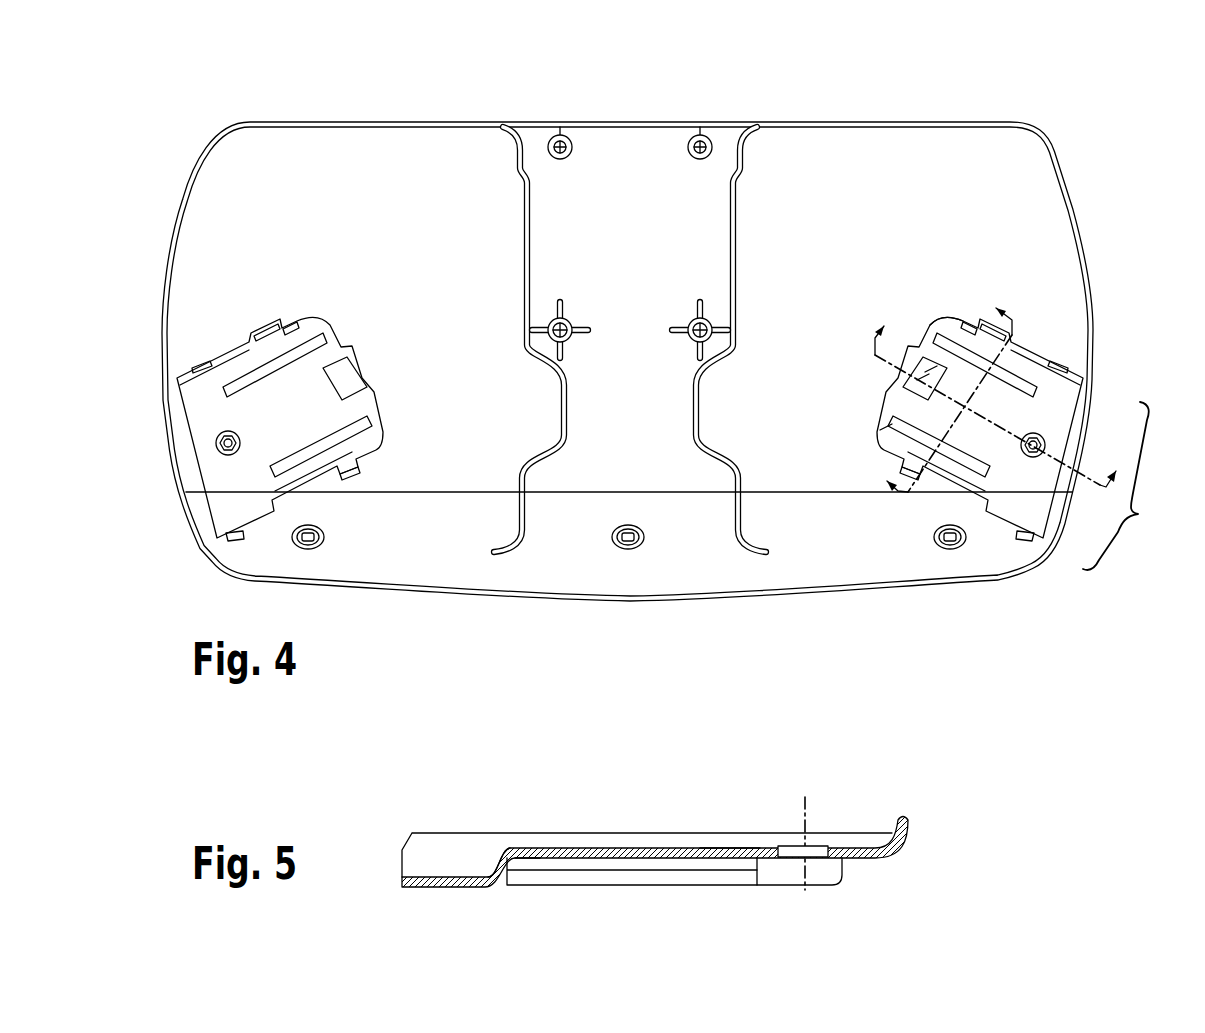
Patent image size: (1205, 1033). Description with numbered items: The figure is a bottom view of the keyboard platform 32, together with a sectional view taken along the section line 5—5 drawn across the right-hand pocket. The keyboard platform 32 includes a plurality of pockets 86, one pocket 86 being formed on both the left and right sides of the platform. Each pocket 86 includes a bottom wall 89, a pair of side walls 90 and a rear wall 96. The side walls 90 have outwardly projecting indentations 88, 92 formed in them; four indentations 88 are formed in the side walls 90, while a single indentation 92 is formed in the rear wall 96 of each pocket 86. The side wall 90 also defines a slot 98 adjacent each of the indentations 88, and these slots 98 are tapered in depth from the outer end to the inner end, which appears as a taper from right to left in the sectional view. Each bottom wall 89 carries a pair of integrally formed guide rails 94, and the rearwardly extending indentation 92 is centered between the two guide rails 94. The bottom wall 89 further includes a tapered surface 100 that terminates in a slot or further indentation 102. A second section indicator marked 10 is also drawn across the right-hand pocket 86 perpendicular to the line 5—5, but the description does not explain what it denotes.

In FIG. 4, the keyboard platform 32 is at (855, 117).
In FIG. 4, the pocket 86 is at (666, 419).
In FIG. 4, the indentation 88 is at (357, 470).
In FIG. 4, the bottom wall 89 is at (1044, 429).
In FIG. 5, the bottom wall 89 is at (733, 850).
In FIG. 4, the side wall 90 is at (228, 358).
In FIG. 5, the side wall 90 is at (437, 858).
In FIG. 4, the indentation 92 is at (362, 388).
In FIG. 5, the indentation 92 is at (498, 863).
In FIG. 4, the guide rail 94 is at (310, 347).
In FIG. 5, the guide rail 94 is at (690, 865).
In FIG. 4, the rear wall 96 is at (940, 323).
In FIG. 4, the slot 98 is at (968, 318).
In FIG. 5, the slot 98 is at (768, 870).
In FIG. 4, the tapered surface 100 is at (883, 432).
In FIG. 5, the tapered surface 100 is at (527, 858).
In FIG. 4, the further indentation 102 is at (915, 395).
In FIG. 5, the further indentation 102 is at (517, 852).
In FIG. 4, the section line 5- 5 is at (1000, 395).
In FIG. 4, the section line 10- 10 is at (954, 400).